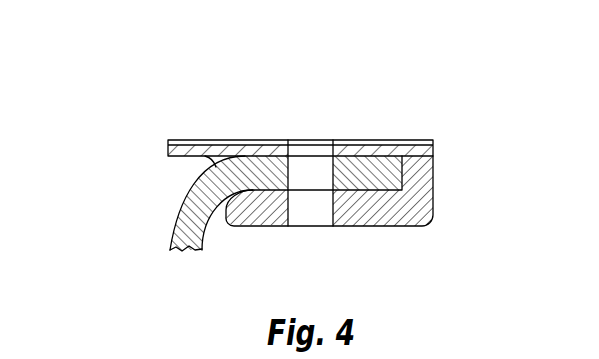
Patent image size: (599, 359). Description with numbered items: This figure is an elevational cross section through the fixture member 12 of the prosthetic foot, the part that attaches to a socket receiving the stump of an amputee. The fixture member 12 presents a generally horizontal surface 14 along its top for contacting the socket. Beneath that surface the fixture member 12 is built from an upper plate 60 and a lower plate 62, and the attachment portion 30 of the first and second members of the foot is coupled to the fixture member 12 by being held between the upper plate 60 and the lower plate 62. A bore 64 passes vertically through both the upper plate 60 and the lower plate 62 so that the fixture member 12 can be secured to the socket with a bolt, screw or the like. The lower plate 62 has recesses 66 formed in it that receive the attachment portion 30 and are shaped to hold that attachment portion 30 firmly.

The fixture member 12 is at (263, 164).
The generally horizontal surface 14 is at (398, 140).
The attachment portion 30 is at (262, 160).
The upper plate 60 is at (168, 153).
The lower plate 62 is at (390, 215).
The bore 64 is at (317, 215).
The recesses 66 is at (37, 352).